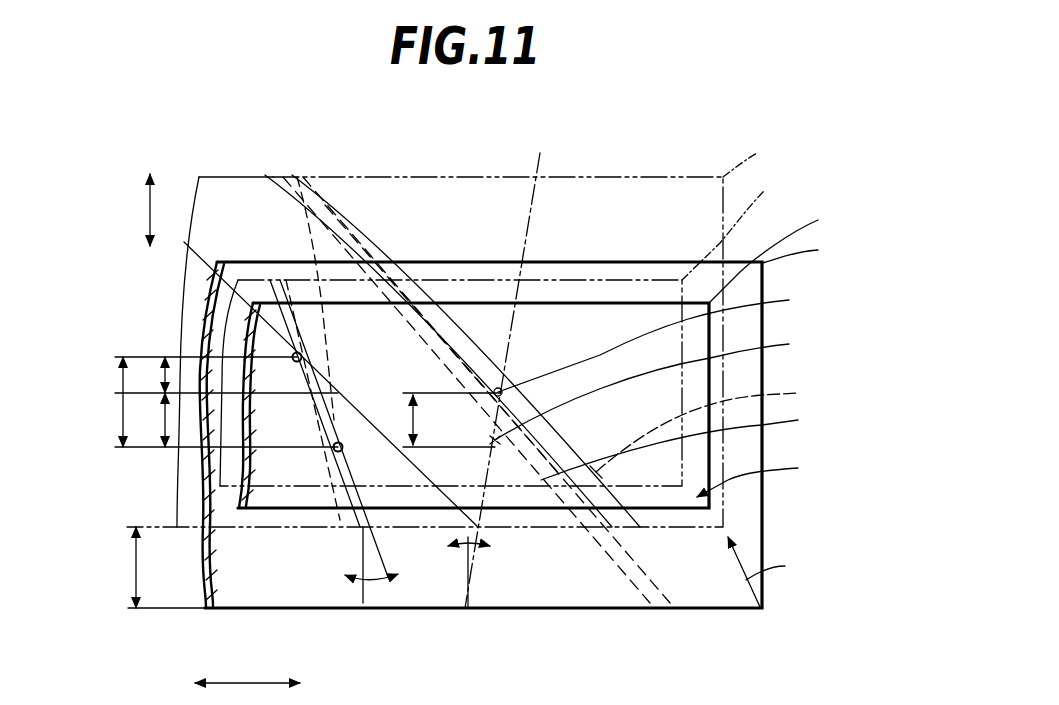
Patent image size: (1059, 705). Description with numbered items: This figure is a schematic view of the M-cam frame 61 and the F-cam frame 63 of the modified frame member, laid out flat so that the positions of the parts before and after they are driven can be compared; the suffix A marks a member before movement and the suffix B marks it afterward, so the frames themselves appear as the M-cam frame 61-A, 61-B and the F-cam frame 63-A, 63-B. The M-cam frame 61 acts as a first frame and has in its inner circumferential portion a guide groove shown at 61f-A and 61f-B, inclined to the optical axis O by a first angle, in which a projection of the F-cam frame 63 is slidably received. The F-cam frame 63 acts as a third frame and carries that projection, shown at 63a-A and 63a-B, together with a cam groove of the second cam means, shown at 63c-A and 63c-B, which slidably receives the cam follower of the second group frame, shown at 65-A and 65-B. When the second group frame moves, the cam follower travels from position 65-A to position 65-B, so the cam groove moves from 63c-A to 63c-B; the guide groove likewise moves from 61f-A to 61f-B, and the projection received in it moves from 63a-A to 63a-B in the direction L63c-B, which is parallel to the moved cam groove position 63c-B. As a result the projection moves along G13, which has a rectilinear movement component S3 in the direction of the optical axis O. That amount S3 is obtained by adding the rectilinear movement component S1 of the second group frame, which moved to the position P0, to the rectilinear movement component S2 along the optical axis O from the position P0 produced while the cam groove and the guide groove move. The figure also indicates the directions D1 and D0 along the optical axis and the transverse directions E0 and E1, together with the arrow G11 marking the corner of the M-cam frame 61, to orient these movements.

The F-cam frame 63 is at (723, 527).
The M-cam frame 61 is at (712, 500).
The F-cam frame after movement 63-B is at (757, 153).
The M-cam frame after movement 61-B is at (765, 190).
The M-cam frame before movement 61-A is at (797, 253).
The F-cam frame before movement 63-A is at (823, 249).
The cam follower after movement 65-B is at (674, 340).
The cam follower before movement 65-A is at (672, 386).
The cam groove before movement 63c-A is at (571, 351).
The cam groove after movement 63c-B is at (580, 390).
The guide groove after movement 61f-B is at (232, 385).
The guide groove before movement 61f-A is at (297, 177).
The projection after movement 63a-B is at (297, 357).
The projection before movement 63a-A is at (338, 447).
The position P0 is at (338, 393).
The direction L63c-B is at (450, 556).
The direction G11 is at (771, 475).
The movement path G13 is at (780, 572).
The rectilinear movement component S1 is at (165, 440).
The rectilinear movement component S2 is at (165, 360).
The rectilinear movement component S3 is at (211, 482).
The direction D1 is at (128, 205).
The direction D0 is at (120, 243).
The optical axis O is at (148, 208).
The direction E0 is at (242, 670).
The direction E1 is at (285, 670).